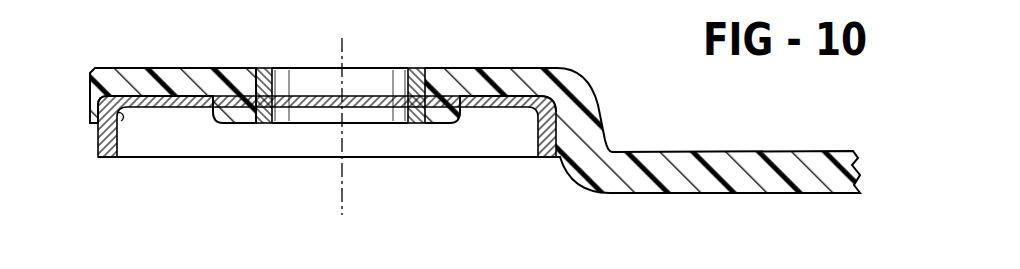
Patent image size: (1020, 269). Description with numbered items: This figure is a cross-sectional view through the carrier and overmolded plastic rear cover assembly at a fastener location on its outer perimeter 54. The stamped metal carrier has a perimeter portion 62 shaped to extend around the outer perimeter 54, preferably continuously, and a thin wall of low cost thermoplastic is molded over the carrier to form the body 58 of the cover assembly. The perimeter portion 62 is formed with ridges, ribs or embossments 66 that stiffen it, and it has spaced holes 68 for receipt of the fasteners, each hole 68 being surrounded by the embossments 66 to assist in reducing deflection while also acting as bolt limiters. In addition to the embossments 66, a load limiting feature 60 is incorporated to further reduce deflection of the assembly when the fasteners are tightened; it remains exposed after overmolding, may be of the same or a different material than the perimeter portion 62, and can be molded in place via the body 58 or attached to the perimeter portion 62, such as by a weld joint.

The outer perimeter 54 is at (90, 89).
The body 58 is at (713, 150).
The load limiting feature 60 is at (412, 68).
The perimeter portion 62 is at (396, 157).
The embossment 66 is at (98, 143).
The hole 68 is at (372, 88).